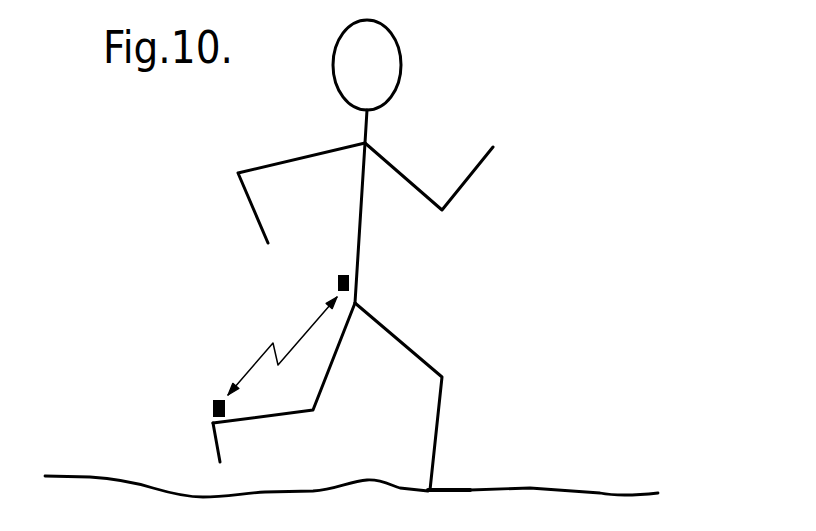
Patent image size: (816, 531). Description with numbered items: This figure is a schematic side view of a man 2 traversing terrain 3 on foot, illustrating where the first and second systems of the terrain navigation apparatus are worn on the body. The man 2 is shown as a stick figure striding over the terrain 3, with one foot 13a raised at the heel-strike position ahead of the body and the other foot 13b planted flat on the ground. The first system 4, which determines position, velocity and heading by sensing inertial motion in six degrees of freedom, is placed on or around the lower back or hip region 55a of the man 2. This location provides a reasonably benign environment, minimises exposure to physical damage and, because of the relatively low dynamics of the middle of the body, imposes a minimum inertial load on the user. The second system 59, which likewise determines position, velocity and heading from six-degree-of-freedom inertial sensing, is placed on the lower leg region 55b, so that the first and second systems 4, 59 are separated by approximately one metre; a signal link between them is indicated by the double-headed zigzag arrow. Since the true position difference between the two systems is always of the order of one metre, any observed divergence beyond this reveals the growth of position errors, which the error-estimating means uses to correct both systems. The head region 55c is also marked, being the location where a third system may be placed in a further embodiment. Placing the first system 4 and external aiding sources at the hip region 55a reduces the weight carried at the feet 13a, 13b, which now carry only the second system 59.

The man 2 is at (316, 255).
The terrain 3 is at (62, 473).
The first system 4 is at (338, 282).
The foot 13a is at (223, 444).
The foot 13b is at (455, 483).
The lower back or hip region 55a is at (360, 283).
The lower leg region 55b is at (228, 430).
The head region 55c is at (332, 62).
The second system 59 is at (220, 398).